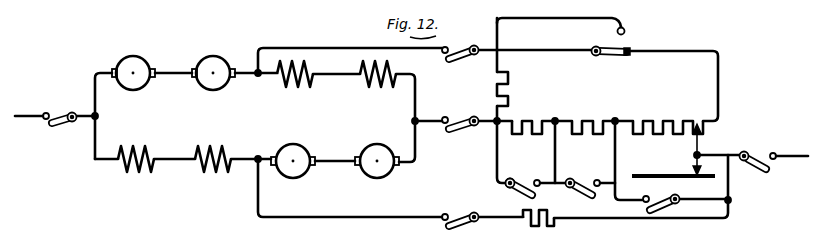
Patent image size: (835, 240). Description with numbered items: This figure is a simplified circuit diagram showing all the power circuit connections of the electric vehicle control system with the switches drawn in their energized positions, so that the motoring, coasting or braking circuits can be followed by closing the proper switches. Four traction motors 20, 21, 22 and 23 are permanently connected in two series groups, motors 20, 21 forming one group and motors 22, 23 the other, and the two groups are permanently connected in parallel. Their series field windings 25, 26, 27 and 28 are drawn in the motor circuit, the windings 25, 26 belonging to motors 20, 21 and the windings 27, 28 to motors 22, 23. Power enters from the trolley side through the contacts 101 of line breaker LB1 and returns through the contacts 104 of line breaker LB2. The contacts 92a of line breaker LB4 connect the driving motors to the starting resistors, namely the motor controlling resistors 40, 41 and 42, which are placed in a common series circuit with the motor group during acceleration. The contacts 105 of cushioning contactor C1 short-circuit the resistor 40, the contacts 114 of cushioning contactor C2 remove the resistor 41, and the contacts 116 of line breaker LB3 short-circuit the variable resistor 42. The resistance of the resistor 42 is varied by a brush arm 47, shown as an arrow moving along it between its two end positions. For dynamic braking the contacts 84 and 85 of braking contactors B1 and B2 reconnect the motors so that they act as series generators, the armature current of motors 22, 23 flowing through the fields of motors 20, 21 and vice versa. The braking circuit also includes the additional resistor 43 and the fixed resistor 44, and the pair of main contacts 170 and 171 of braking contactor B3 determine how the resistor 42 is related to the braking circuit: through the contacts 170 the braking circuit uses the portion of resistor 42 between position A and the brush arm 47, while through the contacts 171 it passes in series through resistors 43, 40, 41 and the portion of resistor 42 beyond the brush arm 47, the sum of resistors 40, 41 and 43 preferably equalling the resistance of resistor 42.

The contacts of line breaker LB1 101 is at (58, 127).
The traction motor 20 is at (121, 63).
The traction motor 21 is at (201, 63).
The traction motor 22 is at (365, 152).
The traction motor 23 is at (282, 152).
The series field winding 25 is at (297, 90).
The series field winding 26 is at (377, 90).
The series field winding 27 is at (214, 146).
The series field winding 28 is at (134, 146).
The contacts of braking contactor B1 84 is at (460, 59).
The contacts of line breaker LB4 92a is at (460, 130).
The contacts of braking contactor B2 85 is at (462, 215).
The resistor 43 is at (509, 80).
The motor controlling resistor 40 is at (528, 121).
The motor controlling resistor 41 is at (585, 121).
The main accelerating and braking resistor 42 is at (660, 121).
The fixed resistor 44 is at (546, 211).
The contacts of cushioning contactor C1 105 is at (520, 189).
The contacts of cushioning contactor C2 114 is at (585, 189).
The contacts of line breaker LB3 116 is at (663, 200).
The brush arm 47 is at (700, 141).
The contacts of line breaker LB2 104 is at (759, 168).
The main contacts of braking contactor B3 170 is at (632, 56).
The main contacts of braking contactor B3 171 is at (625, 29).